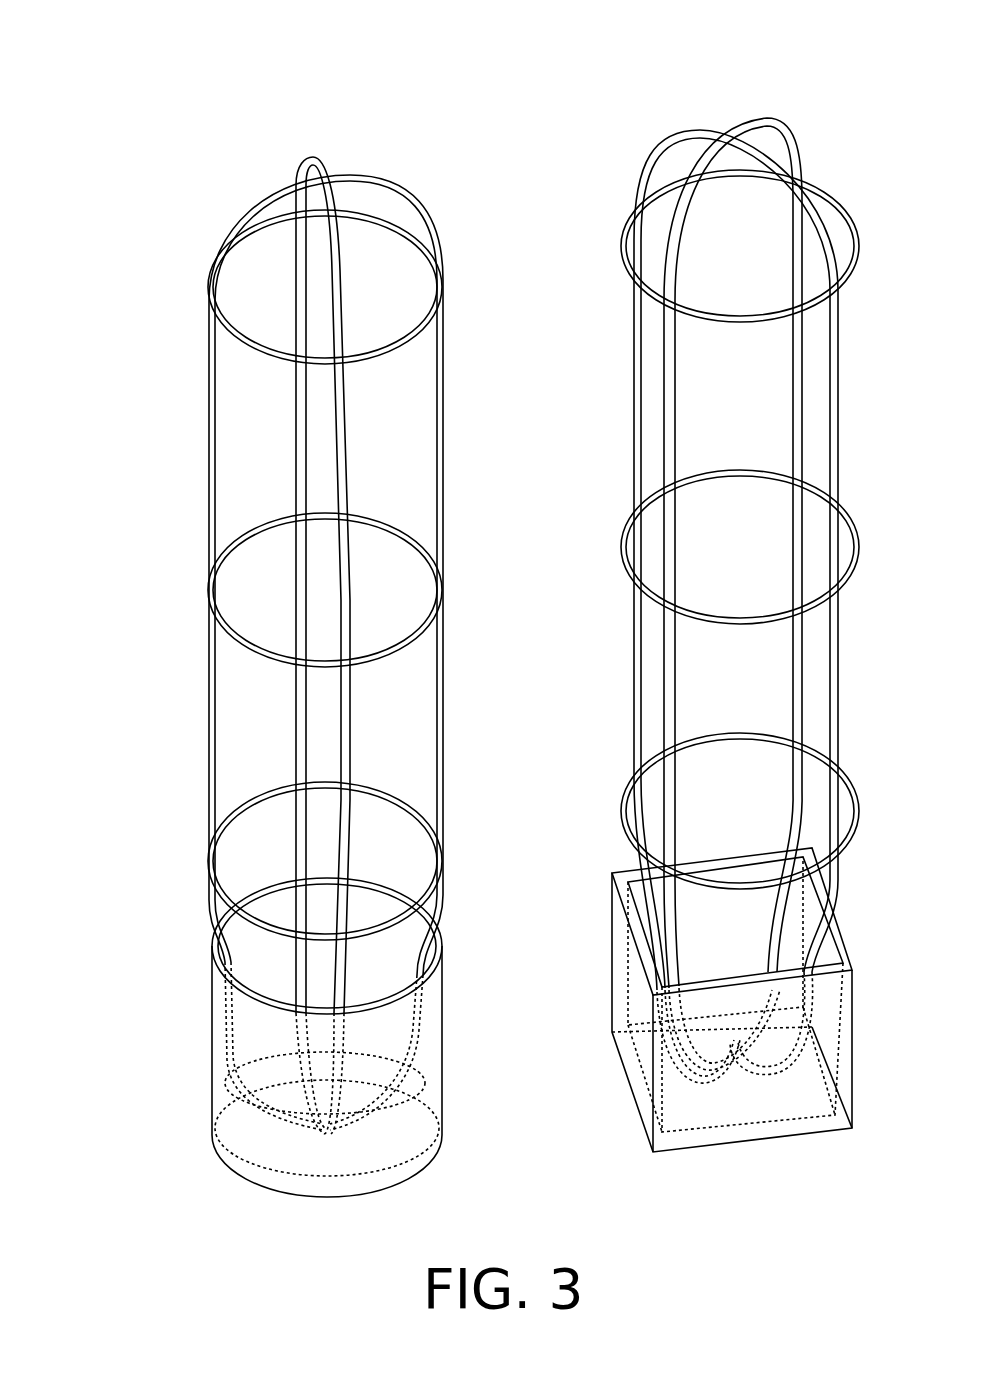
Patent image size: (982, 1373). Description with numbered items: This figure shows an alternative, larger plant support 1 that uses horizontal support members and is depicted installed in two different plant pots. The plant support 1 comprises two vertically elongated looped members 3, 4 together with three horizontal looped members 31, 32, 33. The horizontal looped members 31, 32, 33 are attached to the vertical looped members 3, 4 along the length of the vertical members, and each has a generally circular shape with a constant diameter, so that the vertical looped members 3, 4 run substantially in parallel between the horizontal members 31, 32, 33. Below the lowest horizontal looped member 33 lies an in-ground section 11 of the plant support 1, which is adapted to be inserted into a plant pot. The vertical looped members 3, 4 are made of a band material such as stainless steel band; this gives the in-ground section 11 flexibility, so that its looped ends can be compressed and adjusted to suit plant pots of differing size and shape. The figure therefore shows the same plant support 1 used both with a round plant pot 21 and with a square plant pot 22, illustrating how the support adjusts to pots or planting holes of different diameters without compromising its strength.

The plant support 1 is at (436, 124).
The vertical looped member 3 is at (262, 207).
The vertical looped member 4 is at (342, 253).
The horizontal looped member 31 is at (235, 338).
The horizontal looped member 32 is at (232, 555).
The horizontal looped member 33 is at (245, 803).
The in-ground section 11 is at (225, 1005).
The round plant pot 21 is at (390, 1130).
The square plant pot 22 is at (712, 1085).